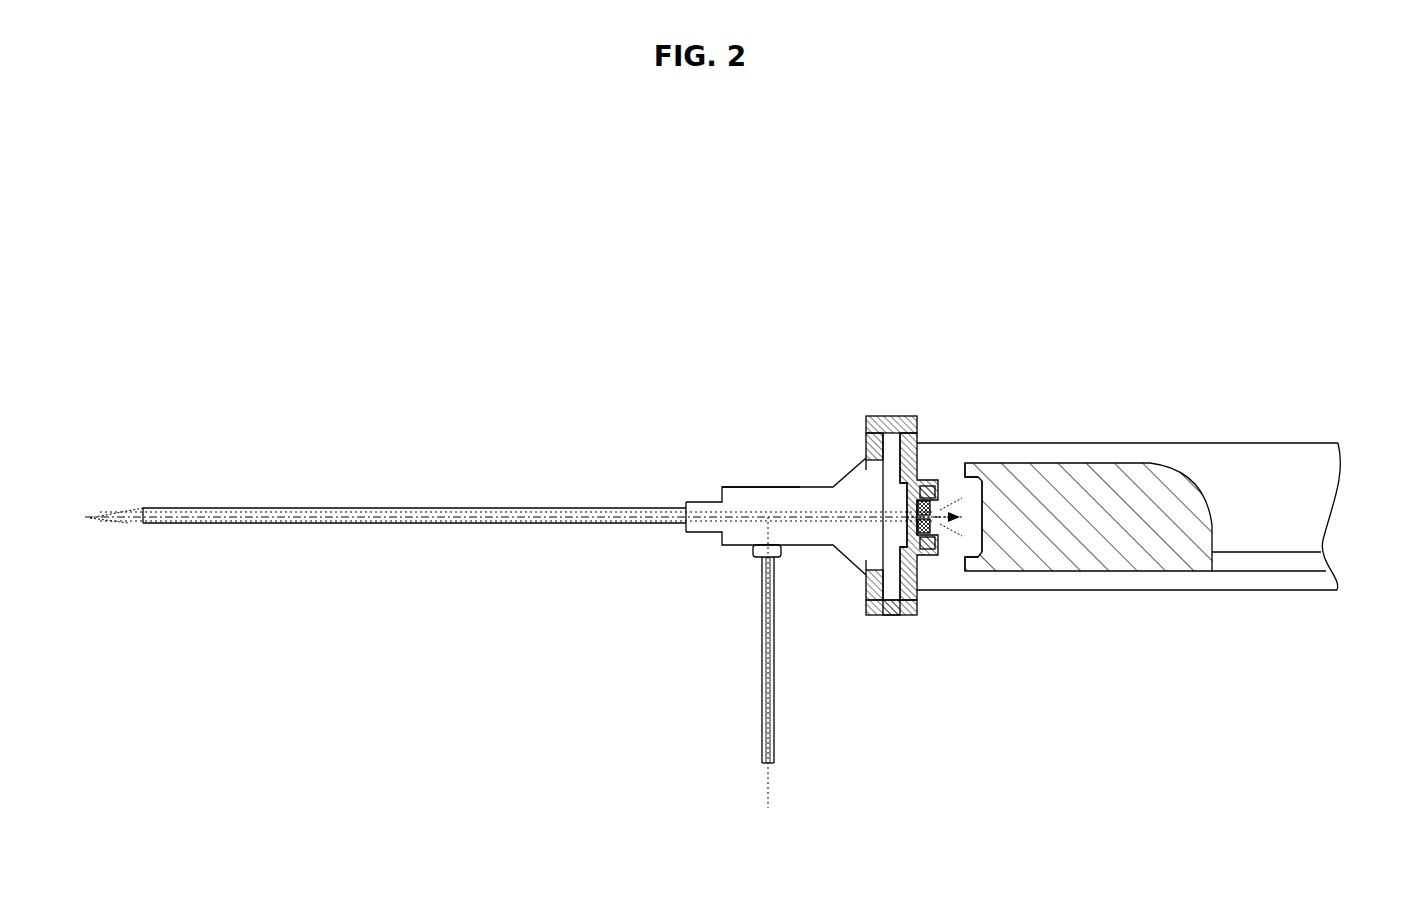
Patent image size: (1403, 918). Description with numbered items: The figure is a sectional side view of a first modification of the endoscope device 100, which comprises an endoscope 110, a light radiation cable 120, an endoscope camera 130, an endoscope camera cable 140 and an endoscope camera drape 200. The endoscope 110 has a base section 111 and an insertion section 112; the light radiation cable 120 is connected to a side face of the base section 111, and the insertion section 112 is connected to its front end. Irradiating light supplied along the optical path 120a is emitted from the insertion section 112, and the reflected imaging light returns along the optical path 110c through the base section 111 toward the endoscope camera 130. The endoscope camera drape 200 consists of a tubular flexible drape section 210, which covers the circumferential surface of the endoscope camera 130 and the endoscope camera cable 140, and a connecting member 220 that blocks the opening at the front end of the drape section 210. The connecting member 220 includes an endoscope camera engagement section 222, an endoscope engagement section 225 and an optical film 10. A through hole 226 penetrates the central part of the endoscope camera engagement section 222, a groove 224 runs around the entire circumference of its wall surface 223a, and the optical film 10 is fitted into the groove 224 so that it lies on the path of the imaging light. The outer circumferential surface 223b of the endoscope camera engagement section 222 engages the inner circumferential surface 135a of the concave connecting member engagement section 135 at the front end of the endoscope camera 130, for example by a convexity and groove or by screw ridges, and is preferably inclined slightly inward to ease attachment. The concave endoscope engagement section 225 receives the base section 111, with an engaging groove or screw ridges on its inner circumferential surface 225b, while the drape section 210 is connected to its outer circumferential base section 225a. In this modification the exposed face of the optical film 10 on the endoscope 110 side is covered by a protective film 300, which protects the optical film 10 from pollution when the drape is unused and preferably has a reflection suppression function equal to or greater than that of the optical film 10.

The optical film 10 is at (570, 563).
The endoscope device 100 is at (1128, 502).
The endoscope 110 is at (512, 459).
The optical path of the imaging light 110c is at (803, 515).
The base section 111 is at (768, 487).
The insertion section 112 is at (385, 506).
The light radiation cable 120 is at (776, 716).
The optical path of the irradiating light 120a is at (772, 785).
The endoscope camera 130 is at (1094, 463).
The connecting member engagement section 135 is at (976, 566).
The inner circumferential surface 135a is at (990, 493).
The endoscope camera cable 140 is at (1268, 572).
The endoscope camera drape 200 is at (1128, 513).
The drape section 210 is at (1128, 592).
The connecting member 220 is at (864, 407).
The endoscope camera engagement section 222 is at (936, 556).
The wall surface 223a is at (938, 512).
The outer circumferential surface 223b is at (930, 500).
The groove 224 is at (920, 556).
The endoscope engagement section 225 is at (866, 618).
The outer circumferential base section 225a is at (926, 486).
The inner circumferential surface 225b is at (891, 614).
The through hole 226 is at (936, 550).
The protective film 300 is at (870, 560).